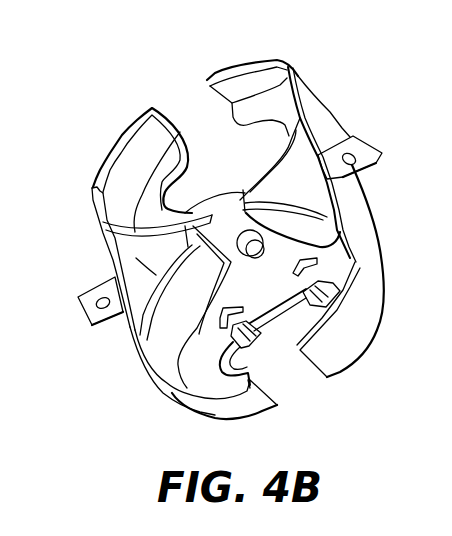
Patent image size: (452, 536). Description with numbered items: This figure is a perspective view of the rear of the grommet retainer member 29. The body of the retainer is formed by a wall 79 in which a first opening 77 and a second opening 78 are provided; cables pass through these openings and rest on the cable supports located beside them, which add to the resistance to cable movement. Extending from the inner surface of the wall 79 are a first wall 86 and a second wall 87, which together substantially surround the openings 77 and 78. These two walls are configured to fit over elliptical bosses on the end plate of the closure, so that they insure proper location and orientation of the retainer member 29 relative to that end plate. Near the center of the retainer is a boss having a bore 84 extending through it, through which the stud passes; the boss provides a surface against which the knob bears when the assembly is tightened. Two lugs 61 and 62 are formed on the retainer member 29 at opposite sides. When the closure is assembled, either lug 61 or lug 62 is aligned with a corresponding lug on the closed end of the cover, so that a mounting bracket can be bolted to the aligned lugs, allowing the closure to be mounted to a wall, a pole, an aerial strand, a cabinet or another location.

The grommet retainer member 29 is at (350, 210).
The lug 61 is at (373, 146).
The lug 62 is at (92, 312).
The first opening 77 is at (278, 348).
The second opening 78 is at (210, 137).
The wall 79 is at (157, 167).
The bore 84 is at (258, 267).
The first wall 86 is at (142, 120).
The second wall 87 is at (228, 74).